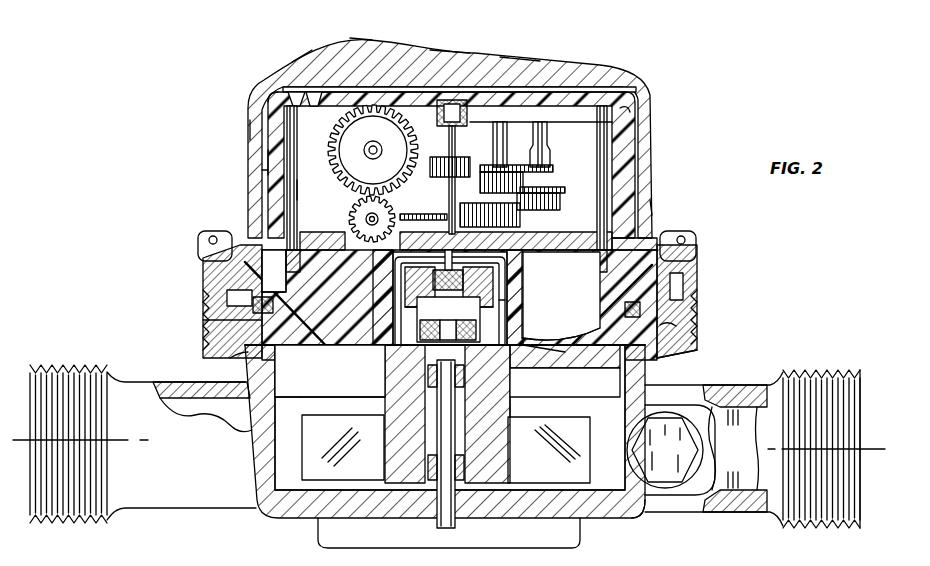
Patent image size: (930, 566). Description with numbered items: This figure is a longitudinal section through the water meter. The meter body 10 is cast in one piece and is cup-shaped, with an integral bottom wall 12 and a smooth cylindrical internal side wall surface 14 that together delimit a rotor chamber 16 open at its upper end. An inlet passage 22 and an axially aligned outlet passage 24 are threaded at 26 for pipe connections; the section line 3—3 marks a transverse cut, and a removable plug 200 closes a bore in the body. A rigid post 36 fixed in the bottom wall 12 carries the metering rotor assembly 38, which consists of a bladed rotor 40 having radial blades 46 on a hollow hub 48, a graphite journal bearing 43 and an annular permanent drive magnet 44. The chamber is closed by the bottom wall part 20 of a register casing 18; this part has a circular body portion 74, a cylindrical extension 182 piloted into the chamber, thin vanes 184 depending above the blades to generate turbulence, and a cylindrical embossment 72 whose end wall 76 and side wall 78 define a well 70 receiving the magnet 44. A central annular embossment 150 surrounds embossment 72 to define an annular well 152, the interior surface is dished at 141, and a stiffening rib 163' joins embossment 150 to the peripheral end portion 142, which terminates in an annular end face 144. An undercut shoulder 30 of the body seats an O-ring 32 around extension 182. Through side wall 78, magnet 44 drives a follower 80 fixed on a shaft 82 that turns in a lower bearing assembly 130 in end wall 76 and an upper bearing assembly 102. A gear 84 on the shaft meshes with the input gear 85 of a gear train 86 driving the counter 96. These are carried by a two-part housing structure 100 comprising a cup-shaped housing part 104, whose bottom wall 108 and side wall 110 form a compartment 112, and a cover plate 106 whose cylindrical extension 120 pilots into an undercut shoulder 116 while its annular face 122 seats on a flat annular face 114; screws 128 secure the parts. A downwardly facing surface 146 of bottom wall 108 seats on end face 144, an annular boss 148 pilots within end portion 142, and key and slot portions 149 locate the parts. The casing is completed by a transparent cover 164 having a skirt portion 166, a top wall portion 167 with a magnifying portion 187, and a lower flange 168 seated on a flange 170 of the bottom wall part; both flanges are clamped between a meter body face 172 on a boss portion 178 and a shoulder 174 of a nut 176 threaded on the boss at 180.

The body 10 is at (617, 527).
The bottom wall 12 is at (513, 520).
The internal side wall surface 14 is at (622, 390).
The meter rotor chamber 16 is at (614, 422).
The register casing 18 is at (658, 165).
The bottom wall part 20 is at (592, 338).
The inlet passage 22 is at (748, 408).
The outlet passage 24 is at (212, 402).
The threads 26 is at (105, 519).
The undercut shoulder 30 is at (619, 352).
The O-ring 32 is at (274, 303).
The post 36 is at (458, 468).
The metering rotor assembly 38 is at (315, 485).
The bladed rotor 40 is at (525, 412).
The graphite journal bearing 43 is at (445, 468).
The permanent drive magnet 44 is at (375, 288).
The blades 46 is at (312, 458).
The hollow hub 48 is at (508, 385).
The well 70 is at (472, 355).
The cylindrical embossment 72 is at (400, 300).
The circular body portion 74 is at (380, 364).
The end wall 76 is at (462, 268).
The cylindrical side wall 78 is at (416, 357).
The follower 80 is at (497, 310).
The shaft 82 is at (449, 185).
The gear 84 is at (486, 144).
The input gear 85 is at (552, 168).
The counter drive gear train 86 is at (553, 177).
The counter 96 is at (348, 146).
The two-part housing structure 100 is at (289, 84).
The upper bearing assembly 102 is at (465, 110).
The cup-shaped housing part 104 is at (261, 173).
The cover plate 106 is at (447, 58).
The bottom wall 108 is at (320, 265).
The cylindrical side wall 110 is at (258, 164).
The compartment 112 is at (300, 191).
The flat annular face 114 is at (268, 97).
The undercut shoulder 116 is at (300, 97).
The cylindrical extension 120 is at (547, 126).
The annular face 122 is at (632, 113).
The screws 128 is at (292, 147).
The lower bearing assembly 130 is at (553, 235).
The concave contour 141 is at (566, 334).
The peripheral end portion 142 is at (222, 252).
The flat annular end face 144 is at (290, 236).
The annular surface 146 is at (230, 296).
The annular boss 148 is at (597, 256).
The key and slot location portions 149 is at (650, 205).
The central annular embossment 150 is at (408, 300).
The annular well 152 is at (538, 350).
The stiffening rib 163' is at (334, 368).
The cover 164 is at (299, 56).
The annular skirt portion 166 is at (250, 127).
The circular top wall portion 167 is at (518, 63).
The annular flange 168 is at (246, 252).
The annular flange 170 is at (217, 283).
The meter body face 172 is at (671, 292).
The annular shoulder 174 is at (642, 243).
The nut 176 is at (698, 345).
The boss portion 178 is at (212, 332).
The threads 180 is at (668, 330).
The cylindrical extension 182 is at (246, 357).
The vanes 184 is at (328, 388).
The magnifying portion 187 is at (356, 39).
The plug 200 is at (667, 474).
The section line 3- 3 is at (17, 478).